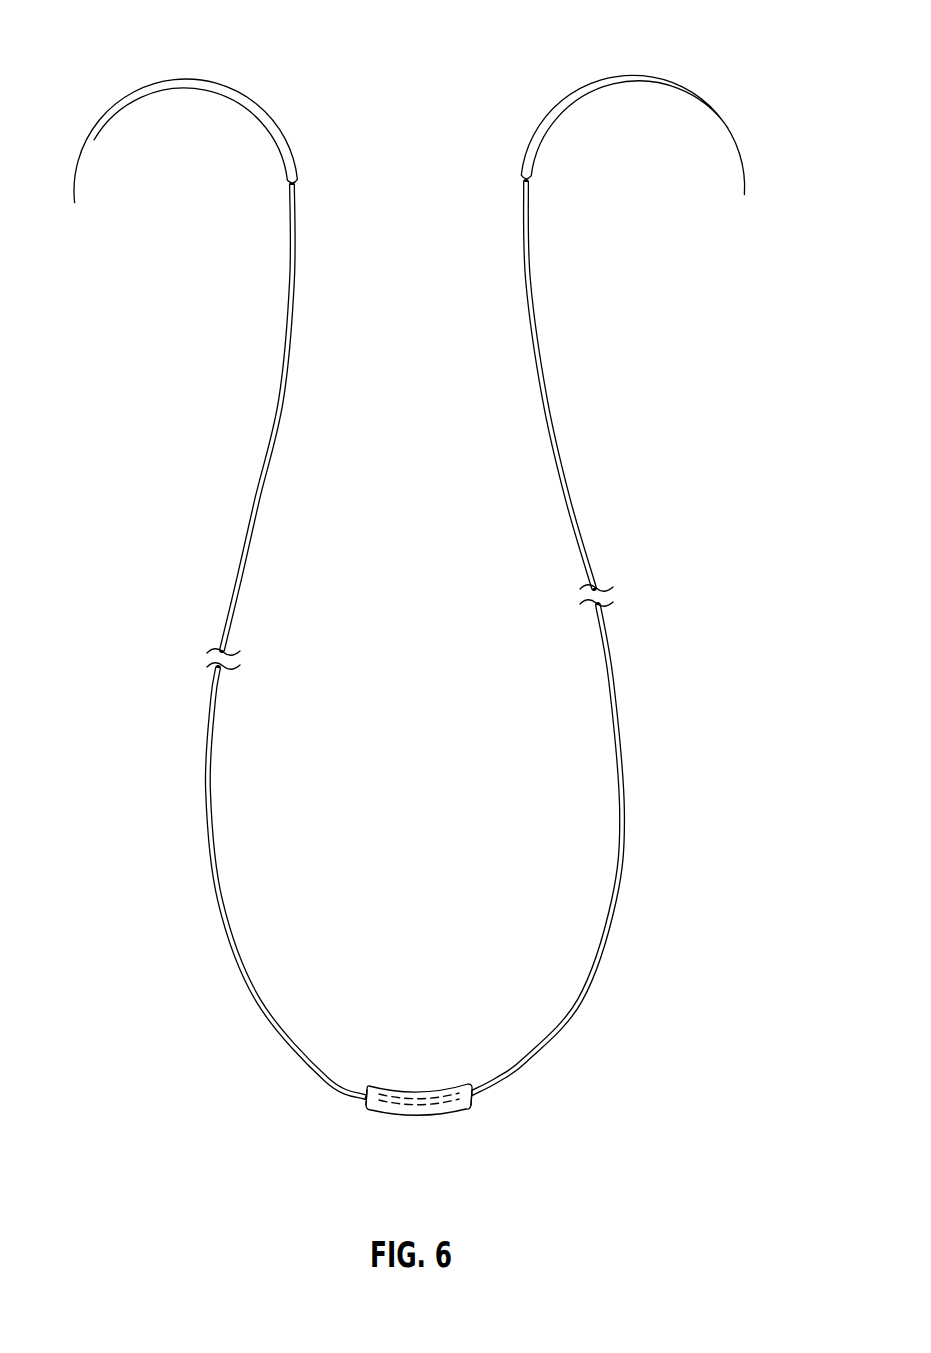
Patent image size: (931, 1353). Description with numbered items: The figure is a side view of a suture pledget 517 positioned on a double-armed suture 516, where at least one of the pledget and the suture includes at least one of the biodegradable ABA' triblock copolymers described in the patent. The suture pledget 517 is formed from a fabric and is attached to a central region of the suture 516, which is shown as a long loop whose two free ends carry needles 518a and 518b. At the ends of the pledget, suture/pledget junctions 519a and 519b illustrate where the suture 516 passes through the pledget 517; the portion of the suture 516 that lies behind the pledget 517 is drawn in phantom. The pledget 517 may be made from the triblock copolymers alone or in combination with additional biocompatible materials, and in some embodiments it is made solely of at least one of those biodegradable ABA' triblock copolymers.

The suture 516 is at (252, 533).
The suture pledget 517 is at (432, 1106).
The needle 518a is at (186, 78).
The needle 518b is at (626, 70).
The suture/pledget junction 519a is at (362, 1100).
The suture/pledget junction 519b is at (474, 1101).